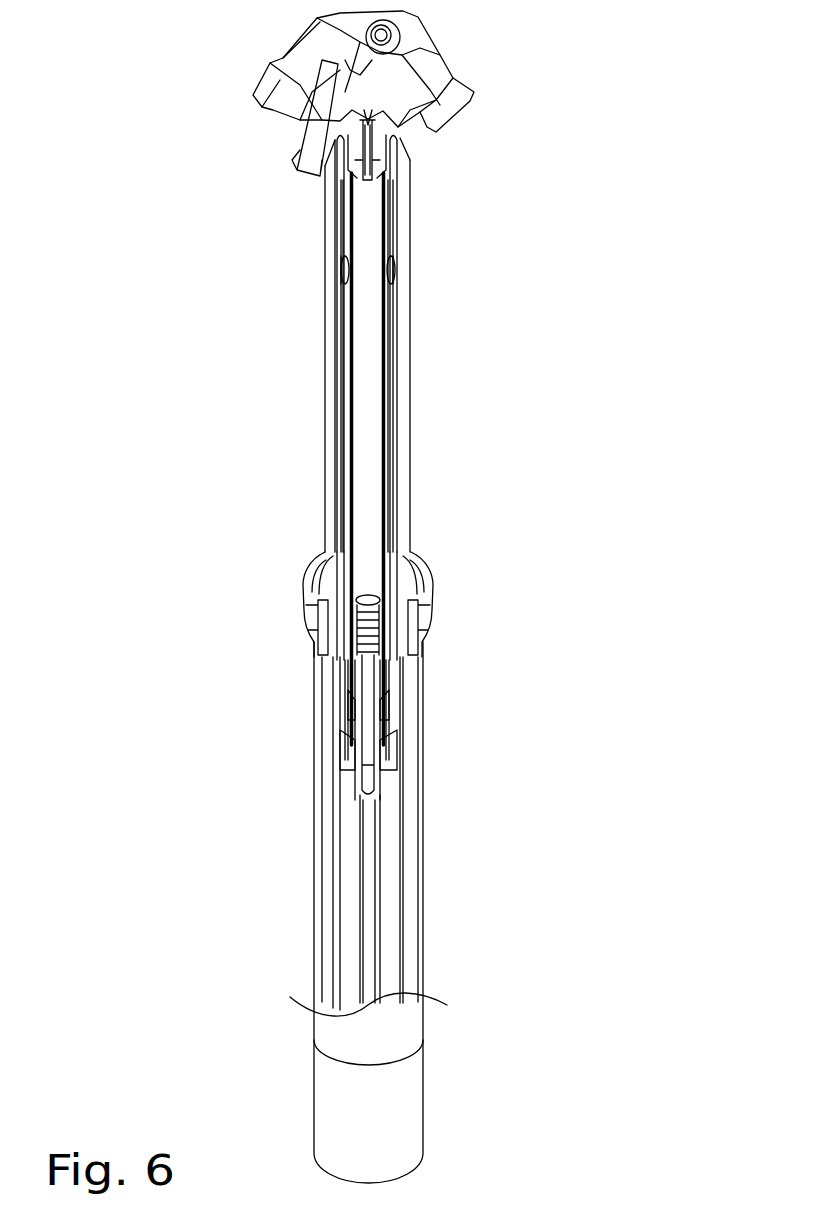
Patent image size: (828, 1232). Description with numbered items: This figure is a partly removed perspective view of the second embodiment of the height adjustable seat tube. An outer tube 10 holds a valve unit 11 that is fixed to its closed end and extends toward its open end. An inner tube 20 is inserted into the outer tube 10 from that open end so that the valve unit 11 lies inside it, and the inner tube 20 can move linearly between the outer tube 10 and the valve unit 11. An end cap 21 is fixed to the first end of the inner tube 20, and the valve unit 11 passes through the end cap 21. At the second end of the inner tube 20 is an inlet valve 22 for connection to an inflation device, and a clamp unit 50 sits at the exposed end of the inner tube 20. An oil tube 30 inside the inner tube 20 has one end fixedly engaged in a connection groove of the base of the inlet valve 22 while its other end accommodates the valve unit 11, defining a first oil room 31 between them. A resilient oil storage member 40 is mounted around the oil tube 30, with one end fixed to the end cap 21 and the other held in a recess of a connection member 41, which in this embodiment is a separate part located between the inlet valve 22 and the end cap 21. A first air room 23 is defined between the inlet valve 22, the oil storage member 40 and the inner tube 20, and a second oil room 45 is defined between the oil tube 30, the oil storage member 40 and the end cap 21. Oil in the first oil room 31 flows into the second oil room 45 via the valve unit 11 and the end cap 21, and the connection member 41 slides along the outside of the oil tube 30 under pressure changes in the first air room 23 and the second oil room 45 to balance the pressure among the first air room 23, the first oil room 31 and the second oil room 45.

The outer tube 10 is at (432, 797).
The valve unit 11 is at (362, 525).
The inner tube 20 is at (413, 288).
The end cap 21 is at (345, 779).
The inlet valve 22 is at (350, 170).
The first air room 23 is at (343, 360).
The oil tube 30 is at (389, 427).
The first oil room 31 is at (363, 440).
The oil storage member 40 is at (391, 382).
The connection member 41 is at (345, 268).
The second oil room 45 is at (351, 727).
The clamp unit 50 is at (462, 72).